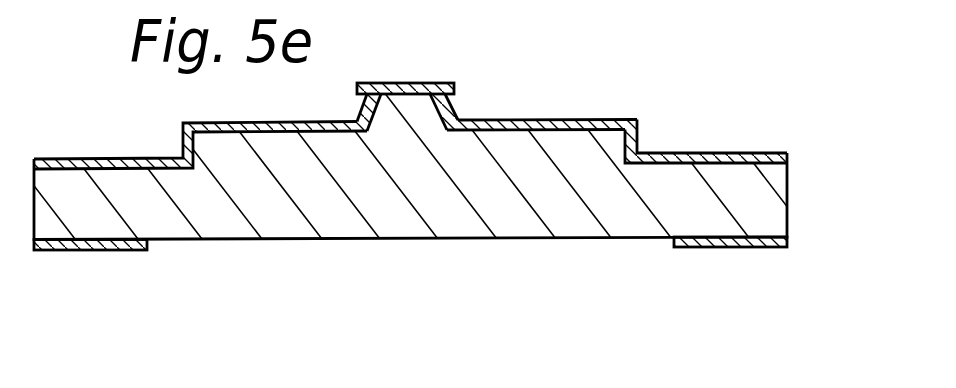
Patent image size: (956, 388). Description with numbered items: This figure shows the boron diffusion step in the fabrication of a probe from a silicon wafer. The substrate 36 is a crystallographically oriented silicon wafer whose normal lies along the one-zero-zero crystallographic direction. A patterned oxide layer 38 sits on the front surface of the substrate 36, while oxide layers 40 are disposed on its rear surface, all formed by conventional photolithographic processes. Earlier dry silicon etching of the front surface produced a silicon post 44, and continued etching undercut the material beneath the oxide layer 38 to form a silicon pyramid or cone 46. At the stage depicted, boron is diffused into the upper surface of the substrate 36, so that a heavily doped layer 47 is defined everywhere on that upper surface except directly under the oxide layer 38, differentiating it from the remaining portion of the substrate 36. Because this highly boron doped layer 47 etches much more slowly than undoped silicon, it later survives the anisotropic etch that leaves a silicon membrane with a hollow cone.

The substrate 36 is at (777, 178).
The oxide layer 38 is at (422, 83).
The oxide layers 40 is at (98, 252).
The silicon post 44 is at (612, 147).
The silicon pyramid or cone 46 is at (382, 118).
The heavily doped layer 47 is at (572, 119).